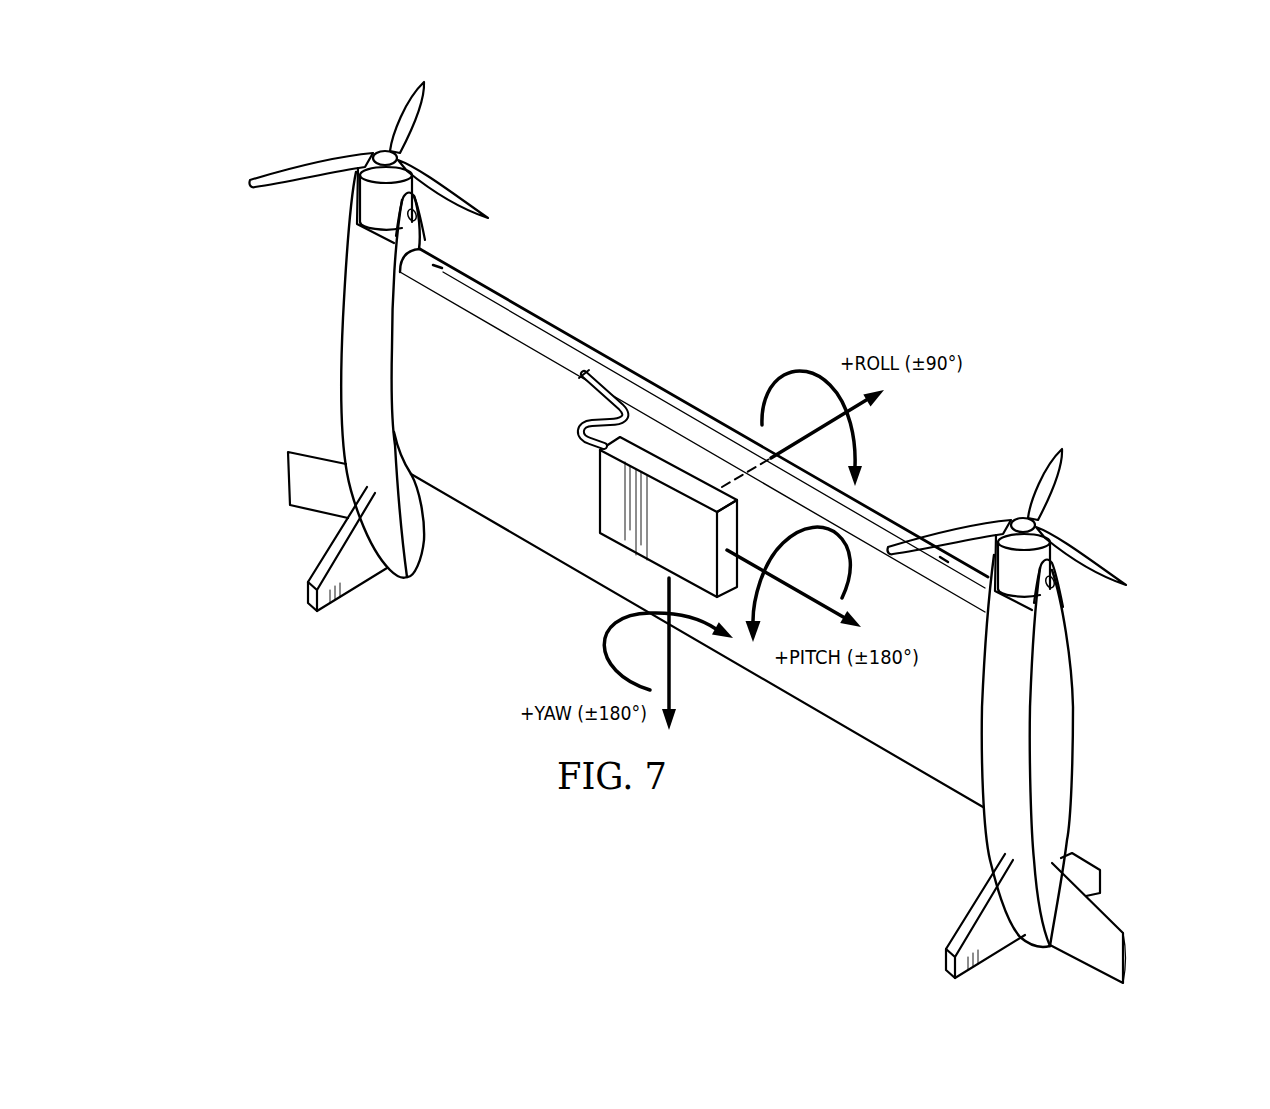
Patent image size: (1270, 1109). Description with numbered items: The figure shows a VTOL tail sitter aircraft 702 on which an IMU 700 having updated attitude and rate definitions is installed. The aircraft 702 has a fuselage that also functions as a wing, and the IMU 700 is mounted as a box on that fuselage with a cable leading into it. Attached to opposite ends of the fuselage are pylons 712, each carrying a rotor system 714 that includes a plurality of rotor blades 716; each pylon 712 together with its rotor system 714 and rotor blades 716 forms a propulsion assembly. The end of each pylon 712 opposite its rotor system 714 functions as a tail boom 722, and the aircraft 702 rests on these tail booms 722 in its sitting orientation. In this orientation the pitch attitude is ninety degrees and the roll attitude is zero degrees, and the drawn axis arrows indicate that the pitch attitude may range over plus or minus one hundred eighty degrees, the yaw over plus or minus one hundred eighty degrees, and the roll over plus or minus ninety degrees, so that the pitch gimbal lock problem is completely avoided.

The IMU 700 is at (612, 494).
The tail sitter aircraft 702 is at (736, 308).
The pylon 712 is at (348, 370).
The rotor system 714 is at (470, 150).
The rotor blades 716 is at (405, 118).
The tail boom 722 is at (265, 552).